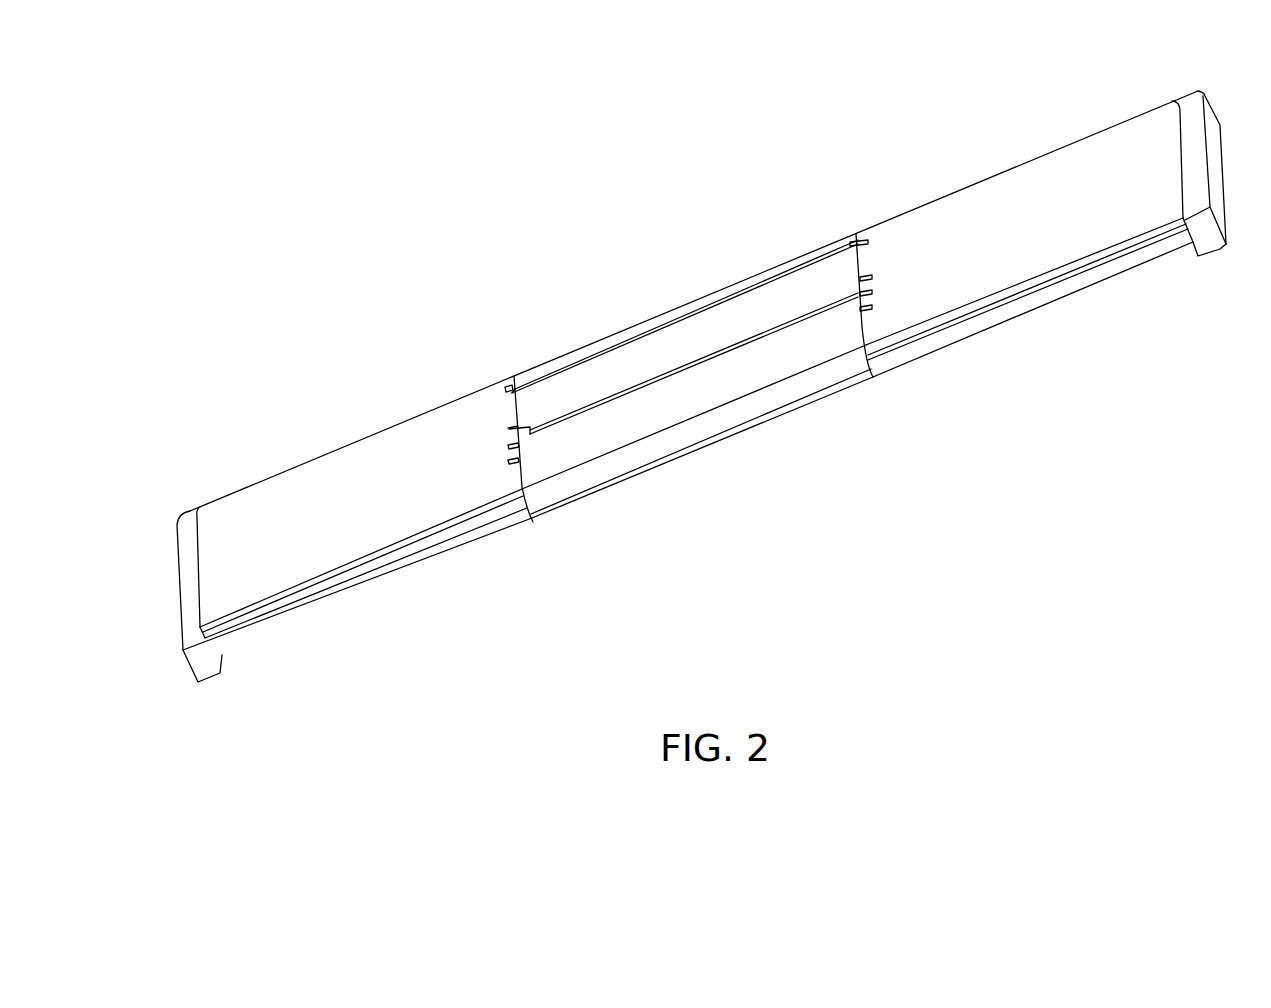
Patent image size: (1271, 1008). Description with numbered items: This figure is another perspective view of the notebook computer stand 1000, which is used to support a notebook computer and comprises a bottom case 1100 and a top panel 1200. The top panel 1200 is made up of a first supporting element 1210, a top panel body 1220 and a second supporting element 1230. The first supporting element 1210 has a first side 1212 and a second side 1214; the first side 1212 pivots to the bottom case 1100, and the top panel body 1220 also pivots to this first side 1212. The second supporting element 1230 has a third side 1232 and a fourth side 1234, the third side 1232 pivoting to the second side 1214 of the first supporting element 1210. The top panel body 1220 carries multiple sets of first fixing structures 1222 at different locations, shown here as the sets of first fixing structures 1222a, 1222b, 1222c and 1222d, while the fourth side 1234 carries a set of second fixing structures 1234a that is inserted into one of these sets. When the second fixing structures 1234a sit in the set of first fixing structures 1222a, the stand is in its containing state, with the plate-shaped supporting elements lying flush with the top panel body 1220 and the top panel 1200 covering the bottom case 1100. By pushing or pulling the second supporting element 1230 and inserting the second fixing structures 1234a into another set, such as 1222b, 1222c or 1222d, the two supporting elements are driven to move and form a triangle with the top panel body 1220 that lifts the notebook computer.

The notebook computer stand 1000 is at (1217, 644).
The bottom case 1100 is at (1200, 198).
The top panel 1200 is at (1193, 162).
The top panel body 1220 is at (1007, 190).
The first supporting element 1210 is at (950, 496).
The first side 1212 is at (829, 345).
The second side 1214 is at (855, 305).
The second supporting element 1230 is at (780, 170).
The fourth side 1234 is at (687, 303).
The third side 1232 is at (773, 325).
The second fixing structures 1234a is at (865, 240).
The first fixing structures 1222 is at (412, 446).
The set of first fixing structures 1222a is at (505, 388).
The set of first fixing structures 1222b is at (507, 427).
The set of first fixing structures 1222c is at (507, 446).
The set of first fixing structures 1222d is at (499, 455).